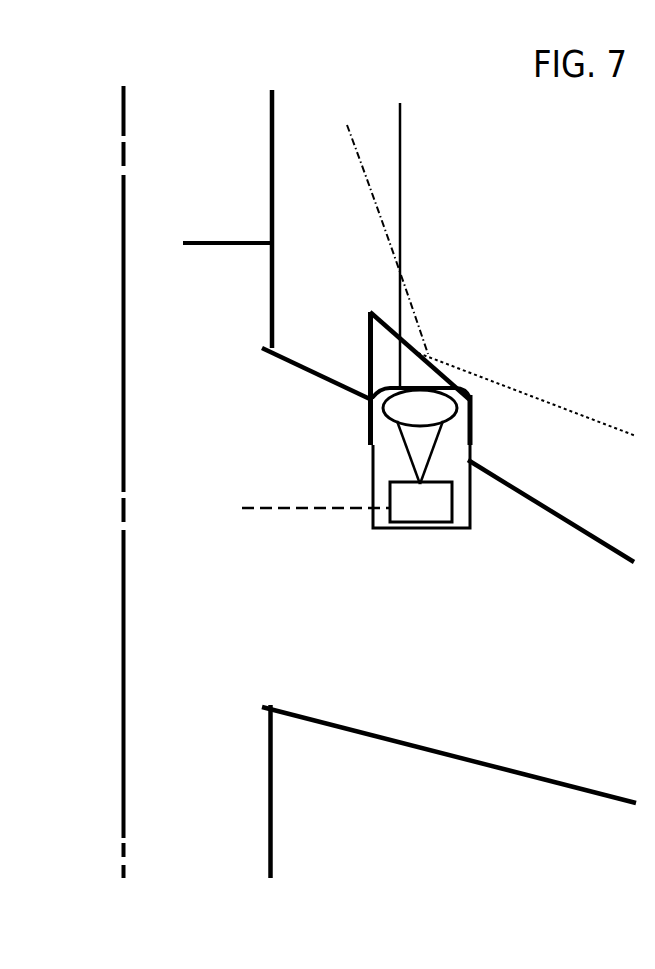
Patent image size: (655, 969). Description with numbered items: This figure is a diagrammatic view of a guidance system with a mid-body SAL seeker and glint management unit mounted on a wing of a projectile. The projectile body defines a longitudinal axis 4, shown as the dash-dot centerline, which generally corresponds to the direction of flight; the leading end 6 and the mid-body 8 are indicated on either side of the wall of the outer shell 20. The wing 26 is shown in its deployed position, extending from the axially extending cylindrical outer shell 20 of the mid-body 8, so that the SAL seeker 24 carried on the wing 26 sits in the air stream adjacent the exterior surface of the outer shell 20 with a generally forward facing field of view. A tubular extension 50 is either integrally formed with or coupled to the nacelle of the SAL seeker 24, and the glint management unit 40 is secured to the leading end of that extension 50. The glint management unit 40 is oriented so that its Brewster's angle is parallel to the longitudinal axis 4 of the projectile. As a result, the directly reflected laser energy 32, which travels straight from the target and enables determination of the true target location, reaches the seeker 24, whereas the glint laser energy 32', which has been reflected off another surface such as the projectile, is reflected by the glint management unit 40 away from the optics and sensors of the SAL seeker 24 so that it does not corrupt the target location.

The longitudinal axis 4 is at (122, 189).
The leading end 6 is at (246, 210).
The mid-body 8 is at (244, 294).
The outer shell 20 is at (272, 827).
The SAL seeker 24 is at (470, 487).
The wing 26 is at (482, 677).
The directly reflected laser energy 32 is at (433, 245).
The glint laser energy 32' is at (365, 197).
The glint management unit 40 is at (465, 375).
The tubular extension 50 is at (368, 355).